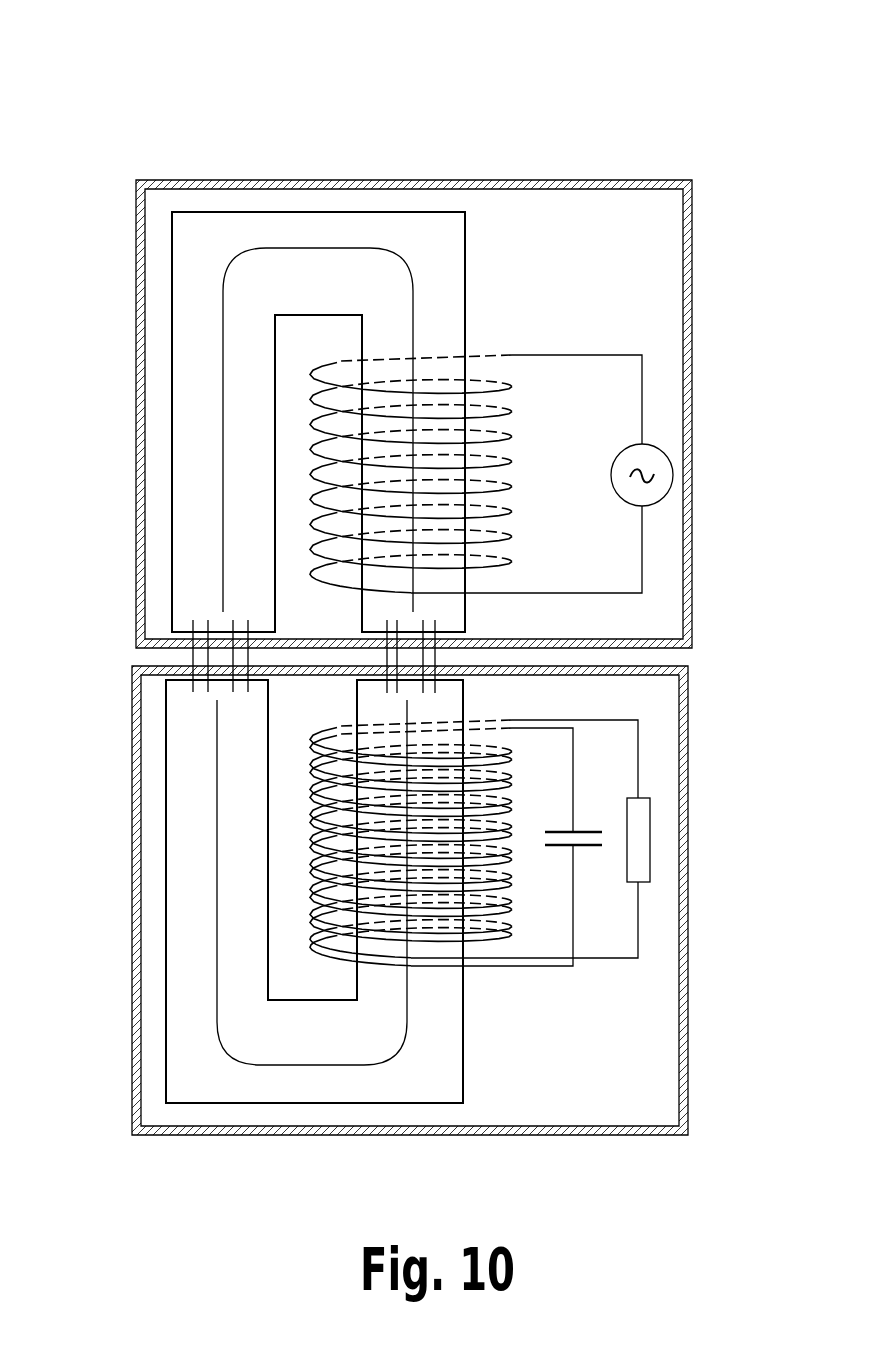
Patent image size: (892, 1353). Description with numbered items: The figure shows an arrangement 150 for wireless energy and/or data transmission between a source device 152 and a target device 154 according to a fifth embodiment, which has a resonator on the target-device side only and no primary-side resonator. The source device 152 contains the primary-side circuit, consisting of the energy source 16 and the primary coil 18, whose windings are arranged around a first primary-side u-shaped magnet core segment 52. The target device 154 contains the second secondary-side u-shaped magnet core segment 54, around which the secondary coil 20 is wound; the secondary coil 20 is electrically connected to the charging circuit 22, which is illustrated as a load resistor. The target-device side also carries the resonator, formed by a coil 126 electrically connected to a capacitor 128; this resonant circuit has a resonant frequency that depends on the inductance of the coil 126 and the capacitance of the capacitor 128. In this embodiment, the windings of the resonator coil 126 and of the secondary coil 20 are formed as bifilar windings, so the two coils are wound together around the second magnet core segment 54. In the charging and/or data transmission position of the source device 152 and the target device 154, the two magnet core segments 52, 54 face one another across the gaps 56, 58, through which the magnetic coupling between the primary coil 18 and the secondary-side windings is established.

The arrangement 150 is at (607, 57).
The source device 152 is at (693, 291).
The target device 154 is at (689, 704).
The first primary-side u-shaped magnet core segment 52 is at (440, 253).
The second secondary-side u-shaped magnet core segment 54 is at (435, 705).
The primary coil 18 is at (508, 462).
The secondary coil 20 is at (508, 826).
The coil 126 is at (340, 727).
The energy source 16 is at (673, 476).
The charging circuit 22 is at (638, 842).
The capacitor 128 is at (578, 832).
The gap 56 is at (152, 656).
The gap 58 is at (478, 657).